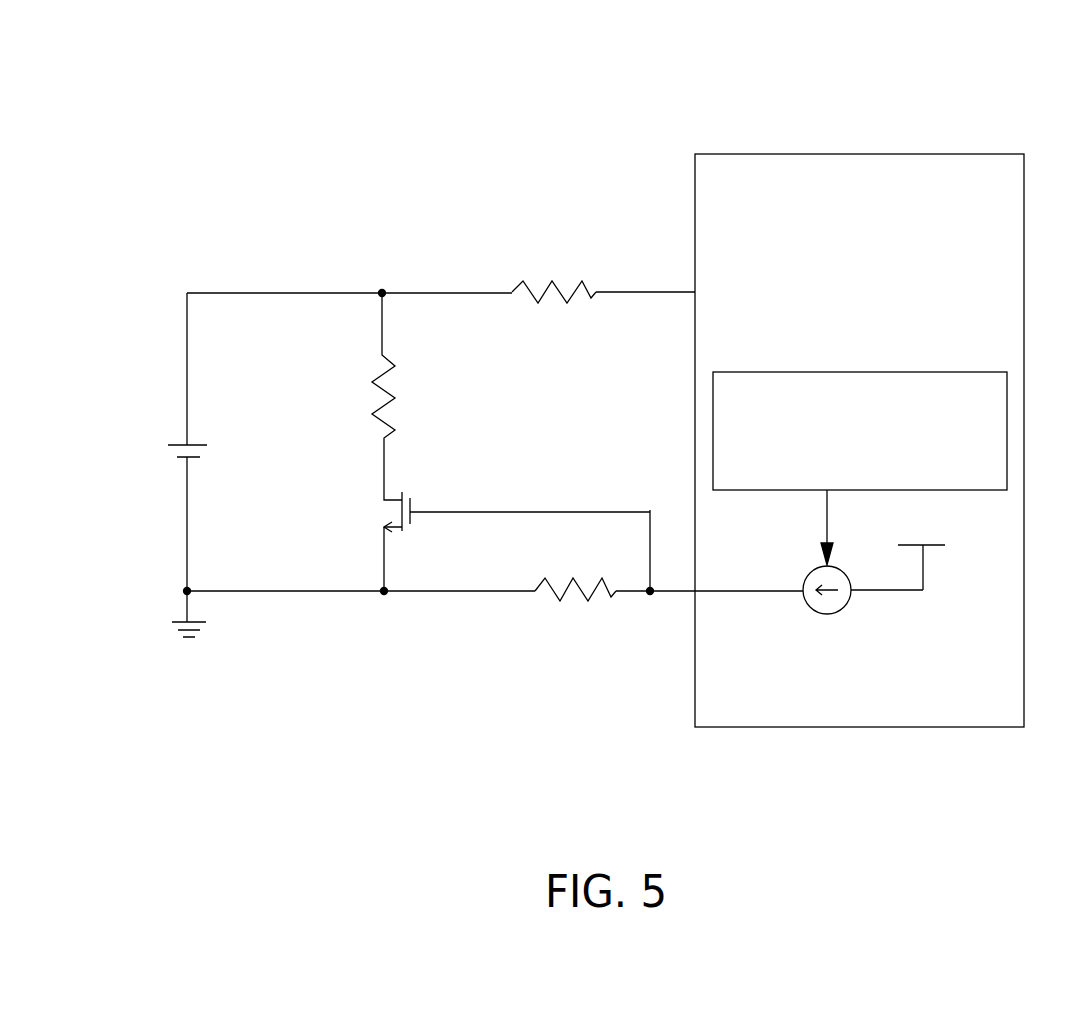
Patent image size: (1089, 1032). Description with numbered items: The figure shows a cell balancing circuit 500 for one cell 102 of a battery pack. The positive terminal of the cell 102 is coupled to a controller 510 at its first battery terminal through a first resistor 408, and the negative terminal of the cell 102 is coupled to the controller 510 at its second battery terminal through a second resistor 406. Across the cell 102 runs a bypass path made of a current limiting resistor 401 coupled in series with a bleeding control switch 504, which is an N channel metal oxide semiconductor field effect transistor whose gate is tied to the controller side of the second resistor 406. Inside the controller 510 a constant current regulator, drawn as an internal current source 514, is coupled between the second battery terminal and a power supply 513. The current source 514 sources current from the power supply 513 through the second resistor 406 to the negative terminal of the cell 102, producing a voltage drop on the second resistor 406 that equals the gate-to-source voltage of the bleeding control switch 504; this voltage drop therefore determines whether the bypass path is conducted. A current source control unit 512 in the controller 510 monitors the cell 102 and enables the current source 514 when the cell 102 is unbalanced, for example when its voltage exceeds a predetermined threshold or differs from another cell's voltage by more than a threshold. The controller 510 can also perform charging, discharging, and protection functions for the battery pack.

The cell balancing circuit 500 is at (983, 106).
The controller 510 is at (1025, 190).
The current source control unit 512 is at (898, 372).
The current source 514 is at (845, 608).
The power supply Vcc 513 is at (931, 546).
The first resistor 408 is at (575, 293).
The second resistor 406 is at (597, 589).
The current limiting resistor 401 is at (389, 440).
The bleeding control switch 504 is at (415, 521).
The cell 102 is at (192, 458).